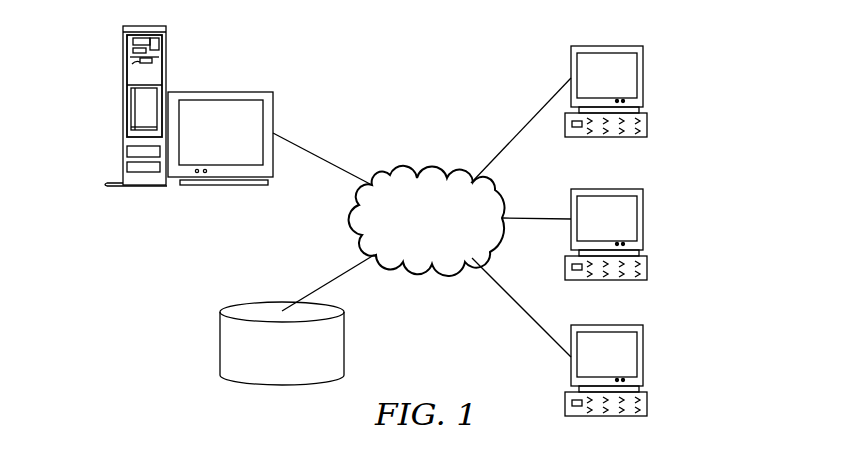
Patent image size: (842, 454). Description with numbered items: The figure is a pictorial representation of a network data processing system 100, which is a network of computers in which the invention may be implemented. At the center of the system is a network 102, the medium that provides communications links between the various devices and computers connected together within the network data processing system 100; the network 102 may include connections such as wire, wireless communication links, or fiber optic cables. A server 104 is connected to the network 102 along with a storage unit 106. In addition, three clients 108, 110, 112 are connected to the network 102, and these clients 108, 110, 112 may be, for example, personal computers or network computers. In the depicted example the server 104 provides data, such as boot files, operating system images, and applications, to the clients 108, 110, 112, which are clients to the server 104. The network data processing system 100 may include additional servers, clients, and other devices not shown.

The network data processing system 100 is at (480, 59).
The network 102 is at (402, 167).
The server 104 is at (123, 107).
The storage unit 106 is at (220, 342).
The client 108 is at (644, 78).
The client 110 is at (644, 219).
The client 112 is at (644, 355).